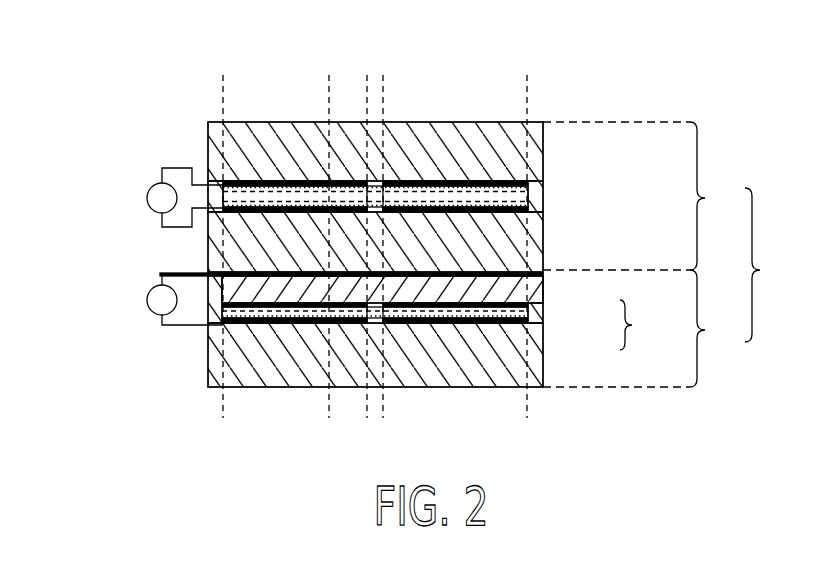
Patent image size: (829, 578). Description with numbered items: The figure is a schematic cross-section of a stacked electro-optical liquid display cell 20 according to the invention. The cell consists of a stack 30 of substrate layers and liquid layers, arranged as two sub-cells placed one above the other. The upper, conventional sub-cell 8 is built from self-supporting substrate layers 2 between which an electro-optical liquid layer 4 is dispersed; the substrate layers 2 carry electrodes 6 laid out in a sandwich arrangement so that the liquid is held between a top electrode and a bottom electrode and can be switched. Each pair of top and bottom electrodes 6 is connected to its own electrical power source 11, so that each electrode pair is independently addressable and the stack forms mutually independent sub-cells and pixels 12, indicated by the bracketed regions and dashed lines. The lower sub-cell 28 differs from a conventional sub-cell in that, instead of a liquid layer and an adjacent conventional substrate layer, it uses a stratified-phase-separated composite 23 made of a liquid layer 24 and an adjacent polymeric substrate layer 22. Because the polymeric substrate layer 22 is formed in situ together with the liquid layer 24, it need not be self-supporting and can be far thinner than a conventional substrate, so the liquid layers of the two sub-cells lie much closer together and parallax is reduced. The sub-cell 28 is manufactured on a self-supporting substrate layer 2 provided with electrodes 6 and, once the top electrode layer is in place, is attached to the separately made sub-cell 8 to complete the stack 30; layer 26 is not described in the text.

The substrate layer 2 is at (522, 146).
The electro-optical liquid layer 4 is at (532, 197).
The electrode 6 is at (528, 183).
The sub-cell 8 is at (635, 196).
The electrical power source 11 is at (147, 198).
The pixel 12 is at (223, 72).
The stacked display cell 20 is at (78, 138).
The polymeric substrate layer 22 is at (528, 302).
The stratified-phase-separated composite 23 is at (642, 325).
The liquid layer 24 is at (530, 318).
The insulating layer 26 is at (525, 275).
The sub-cell 28 is at (641, 328).
The stack 30 is at (771, 265).